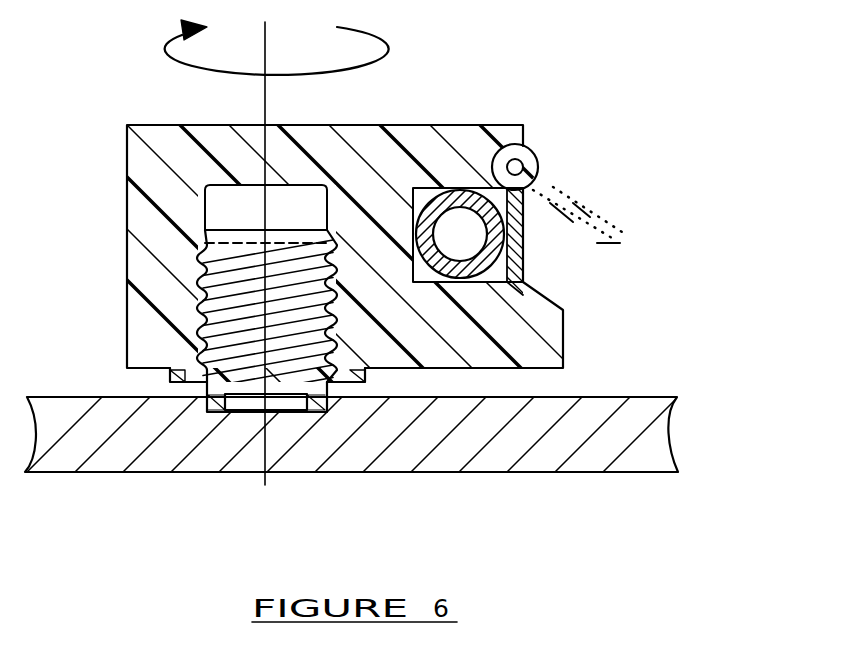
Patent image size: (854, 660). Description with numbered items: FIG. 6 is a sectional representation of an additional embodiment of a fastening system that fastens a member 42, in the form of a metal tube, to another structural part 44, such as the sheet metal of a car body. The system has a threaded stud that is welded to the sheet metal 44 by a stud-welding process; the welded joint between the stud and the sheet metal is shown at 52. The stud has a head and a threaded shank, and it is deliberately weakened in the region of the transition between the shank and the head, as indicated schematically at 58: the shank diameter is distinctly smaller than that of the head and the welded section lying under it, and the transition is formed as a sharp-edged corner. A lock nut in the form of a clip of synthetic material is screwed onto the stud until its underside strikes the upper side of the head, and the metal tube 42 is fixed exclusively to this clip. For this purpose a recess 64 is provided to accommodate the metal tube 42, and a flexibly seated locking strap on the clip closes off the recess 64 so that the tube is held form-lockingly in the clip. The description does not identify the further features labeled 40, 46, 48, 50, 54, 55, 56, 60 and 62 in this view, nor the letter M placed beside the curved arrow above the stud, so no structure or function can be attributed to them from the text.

The tool holder assembly 40 is at (624, 130).
The member 42 is at (495, 255).
The structural part 44 is at (628, 432).
The threaded bolt 46 is at (227, 285).
The holder block 48 is at (423, 155).
The lock ring 50 is at (175, 379).
The welded joint 52 is at (245, 413).
The longitudinal axis 54 is at (253, 262).
The pivot path 55 is at (523, 232).
The external threads 56 is at (197, 315).
The weakening 58 is at (338, 323).
The counterbore recess 60 is at (299, 202).
The bore shoulder 62 is at (200, 252).
The recess 64 is at (500, 148).
The rotation direction M is at (277, 46).